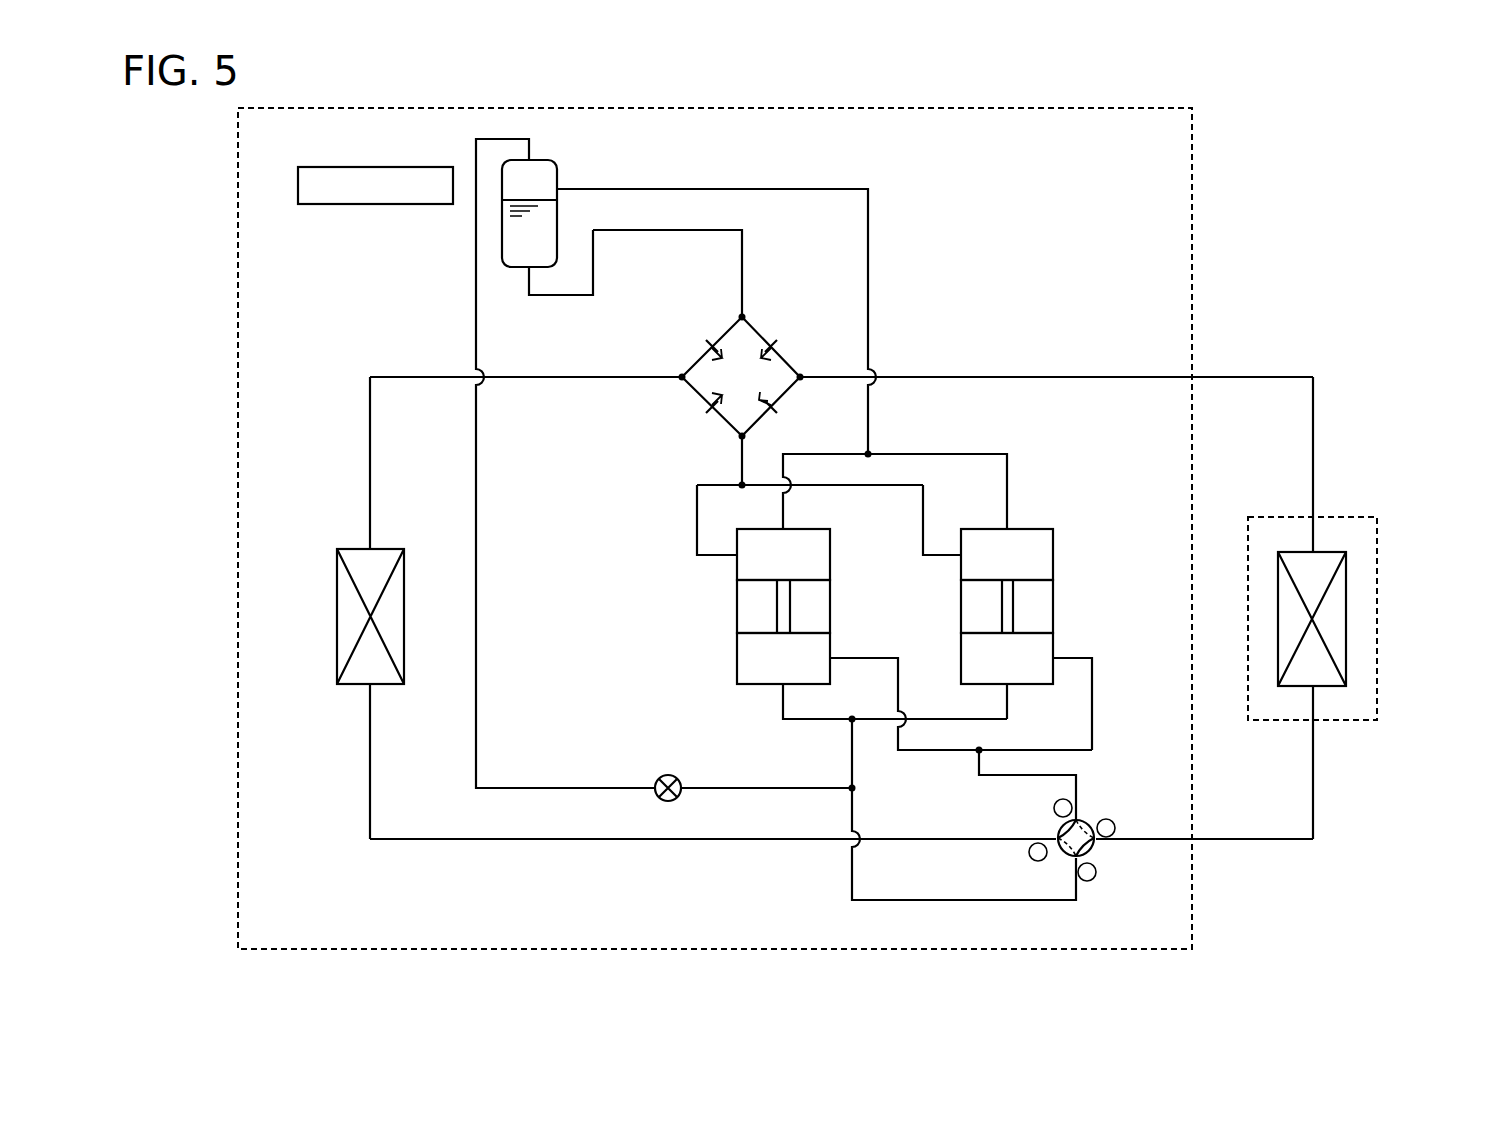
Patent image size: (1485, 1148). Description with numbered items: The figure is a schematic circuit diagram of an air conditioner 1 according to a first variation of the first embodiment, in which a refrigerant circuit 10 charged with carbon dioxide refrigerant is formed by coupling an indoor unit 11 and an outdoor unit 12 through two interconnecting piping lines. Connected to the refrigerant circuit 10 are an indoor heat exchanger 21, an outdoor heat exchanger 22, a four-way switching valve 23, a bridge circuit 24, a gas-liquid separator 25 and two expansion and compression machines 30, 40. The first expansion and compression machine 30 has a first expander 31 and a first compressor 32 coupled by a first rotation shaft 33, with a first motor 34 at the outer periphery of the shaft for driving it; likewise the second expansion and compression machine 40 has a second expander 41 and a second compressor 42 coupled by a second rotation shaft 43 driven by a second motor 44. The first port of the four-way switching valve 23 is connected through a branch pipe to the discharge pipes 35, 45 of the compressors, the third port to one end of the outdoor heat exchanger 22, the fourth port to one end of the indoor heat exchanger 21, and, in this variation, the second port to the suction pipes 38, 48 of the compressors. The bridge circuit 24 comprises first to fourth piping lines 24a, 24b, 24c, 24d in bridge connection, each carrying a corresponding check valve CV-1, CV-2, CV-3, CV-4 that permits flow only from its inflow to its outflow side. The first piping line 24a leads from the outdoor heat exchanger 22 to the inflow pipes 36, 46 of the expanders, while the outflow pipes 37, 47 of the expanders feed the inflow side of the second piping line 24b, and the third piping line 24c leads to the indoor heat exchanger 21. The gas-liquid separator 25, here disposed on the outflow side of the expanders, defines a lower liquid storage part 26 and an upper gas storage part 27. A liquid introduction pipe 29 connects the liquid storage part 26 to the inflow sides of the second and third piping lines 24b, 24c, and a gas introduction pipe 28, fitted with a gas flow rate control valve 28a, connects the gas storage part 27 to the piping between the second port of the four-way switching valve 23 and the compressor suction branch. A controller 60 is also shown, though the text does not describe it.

The air conditioner 1 is at (1425, 185).
The refrigerant circuit 10 is at (1045, 365).
The indoor unit 11 is at (1338, 515).
The outdoor unit 12 is at (1042, 107).
The indoor heat exchanger 21 is at (1325, 688).
The outdoor heat exchanger 22 is at (385, 688).
The four-way switching valve 23 is at (1103, 855).
The bridge circuit 24 is at (738, 349).
The first piping line 24a is at (690, 391).
The second piping line 24b is at (730, 328).
The third piping line 24c is at (754, 327).
The fourth piping line 24d is at (754, 424).
The first check valve CV-1 is at (705, 416).
The second check valve CV-2 is at (706, 353).
The third check valve CV-3 is at (778, 353).
The fourth check valve CV-4 is at (781, 402).
The gas-liquid separator 25 is at (560, 163).
The liquid storage part 26 is at (515, 268).
The gas storage part 27 is at (560, 179).
The gas introduction pipe 28 is at (478, 662).
The gas flow rate control valve 28a is at (668, 773).
The liquid introduction pipe 29 is at (652, 230).
The first expansion and compression machine 30 is at (766, 606).
The first expander 31 is at (833, 557).
The first compressor 32 is at (737, 657).
The first rotation shaft 33 is at (787, 594).
The first motor 34 is at (737, 605).
The discharge pipe 35 is at (870, 658).
The inflow pipe 36 is at (715, 555).
The outflow pipe 37 is at (784, 512).
The suction pipe 38 is at (782, 705).
The second expansion and compression machine 40 is at (1040, 605).
The second expander 41 is at (1056, 543).
The second compressor 42 is at (963, 651).
The second rotation shaft 43 is at (1010, 600).
The second motor 44 is at (970, 605).
The discharge pipe 45 is at (1082, 658).
The inflow pipe 46 is at (946, 554).
The outflow pipe 47 is at (1008, 490).
The suction pipe 48 is at (1007, 695).
The controller 60 is at (352, 167).